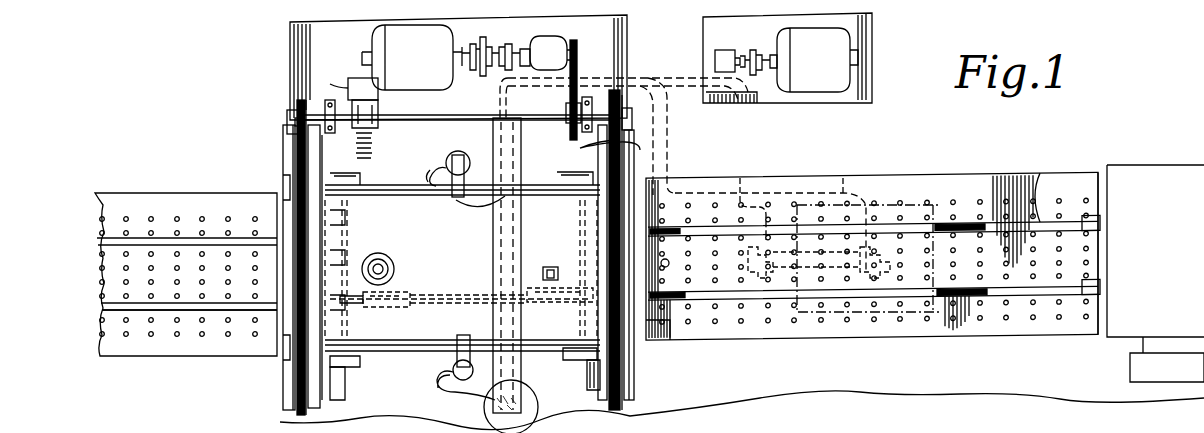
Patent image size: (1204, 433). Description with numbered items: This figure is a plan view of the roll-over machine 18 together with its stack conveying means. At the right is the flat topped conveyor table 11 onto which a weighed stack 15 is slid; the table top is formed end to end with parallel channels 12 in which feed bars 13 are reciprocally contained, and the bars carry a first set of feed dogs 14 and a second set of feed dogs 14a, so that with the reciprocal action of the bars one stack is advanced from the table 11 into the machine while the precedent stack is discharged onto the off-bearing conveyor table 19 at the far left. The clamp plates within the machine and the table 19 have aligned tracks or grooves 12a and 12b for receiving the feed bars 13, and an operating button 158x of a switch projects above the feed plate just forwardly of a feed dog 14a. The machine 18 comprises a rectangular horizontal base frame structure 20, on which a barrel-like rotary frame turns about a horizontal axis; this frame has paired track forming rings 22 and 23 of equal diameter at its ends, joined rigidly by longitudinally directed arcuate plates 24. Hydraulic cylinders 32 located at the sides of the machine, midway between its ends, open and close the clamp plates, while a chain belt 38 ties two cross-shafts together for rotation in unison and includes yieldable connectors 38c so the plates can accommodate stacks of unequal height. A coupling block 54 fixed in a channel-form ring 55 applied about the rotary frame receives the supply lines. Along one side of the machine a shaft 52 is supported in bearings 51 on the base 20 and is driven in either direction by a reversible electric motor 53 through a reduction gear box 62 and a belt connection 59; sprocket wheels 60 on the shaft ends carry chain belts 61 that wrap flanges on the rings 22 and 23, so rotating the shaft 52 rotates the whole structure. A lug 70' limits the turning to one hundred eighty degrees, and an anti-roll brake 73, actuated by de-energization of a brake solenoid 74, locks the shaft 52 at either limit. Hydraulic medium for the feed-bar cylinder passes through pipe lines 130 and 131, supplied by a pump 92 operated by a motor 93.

The conveyor table 11 is at (1019, 169).
The channels 12 is at (1103, 226).
The tracks or grooves 12a is at (660, 328).
The tracks or grooves 12b is at (140, 312).
The feed bars 13 is at (1040, 200).
The first set of feed dogs 14 is at (950, 225).
The second set of feed dogs 14a is at (666, 295).
The stack 15 is at (858, 315).
The roll-over machine 18 is at (630, 140).
The off-bearing conveyor table 19 is at (165, 200).
The base frame structure 20 is at (622, 40).
The track forming ring 22 is at (300, 410).
The track forming ring 23 is at (609, 404).
The arcuate plates 24 is at (395, 330).
The hydraulic cylinder 32 is at (450, 158).
The chain belt 38 is at (455, 292).
The yieldable connectors 38c is at (396, 283).
The bearings 51 is at (325, 108).
The shaft 52 is at (462, 115).
The reversible electric motor 53 is at (372, 40).
The coupling block 54 is at (485, 424).
The ring 55 is at (522, 370).
The belt connection 59 is at (579, 70).
The sprocket wheels 60 is at (298, 112).
The chain belts 61 is at (296, 145).
The reduction gear box 62 is at (545, 42).
The lug 70' is at (553, 258).
The anti-roll brake 73 is at (386, 140).
The brake solenoid 74 is at (355, 80).
The pump 92 is at (722, 52).
The motor 93 is at (800, 32).
The pipe line 130 is at (846, 178).
The pipe line 131 is at (748, 180).
The operating button 158x is at (688, 207).